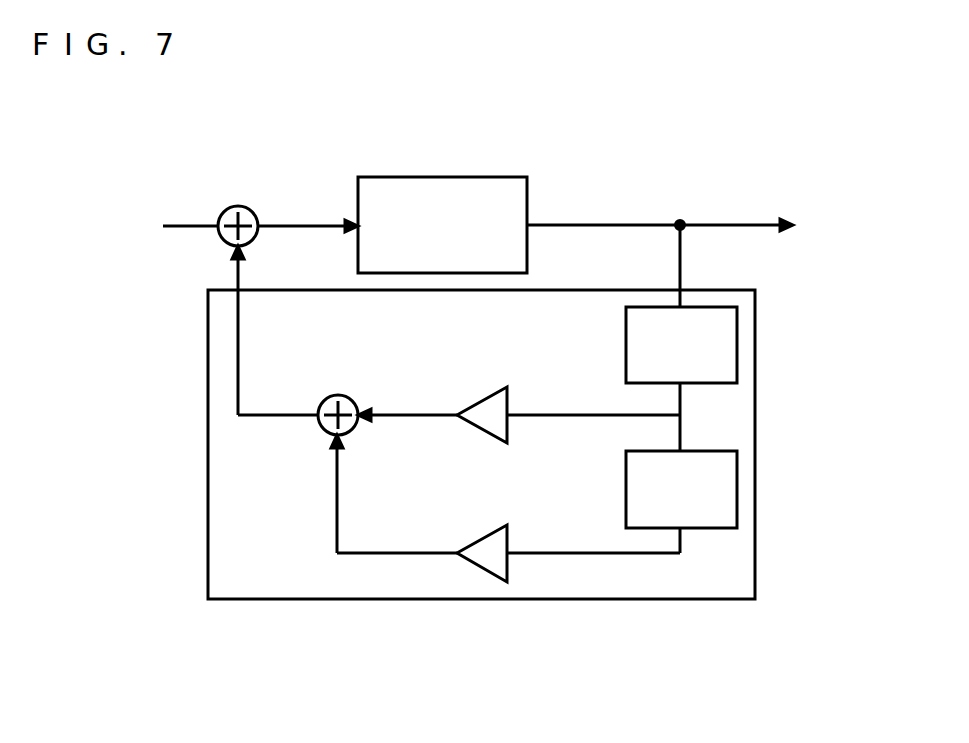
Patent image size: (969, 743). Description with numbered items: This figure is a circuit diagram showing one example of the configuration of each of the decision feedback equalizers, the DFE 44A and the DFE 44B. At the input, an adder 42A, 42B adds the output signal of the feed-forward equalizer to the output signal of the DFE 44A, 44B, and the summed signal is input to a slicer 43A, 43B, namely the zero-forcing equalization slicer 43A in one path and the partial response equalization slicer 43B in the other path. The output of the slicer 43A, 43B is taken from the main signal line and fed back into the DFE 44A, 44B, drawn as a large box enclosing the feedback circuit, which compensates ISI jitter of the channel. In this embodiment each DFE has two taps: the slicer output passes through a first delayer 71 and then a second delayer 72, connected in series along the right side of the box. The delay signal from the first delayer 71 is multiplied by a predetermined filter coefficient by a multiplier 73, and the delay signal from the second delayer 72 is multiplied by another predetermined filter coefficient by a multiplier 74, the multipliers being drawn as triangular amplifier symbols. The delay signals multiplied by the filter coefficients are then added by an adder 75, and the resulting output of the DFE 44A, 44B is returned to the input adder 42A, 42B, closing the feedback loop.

The adder 42A is at (205, 190).
The adder 42B is at (243, 207).
The zero-forcing equalization slicer 43A is at (442, 225).
The partial response equalization slicer 43B is at (442, 225).
The DFE 44A is at (510, 474).
The DFE 44B is at (623, 599).
The delayer 71 is at (626, 362).
The delayer 72 is at (626, 490).
The multiplier 73 is at (486, 399).
The multiplier 74 is at (487, 538).
The adder 75 is at (340, 394).